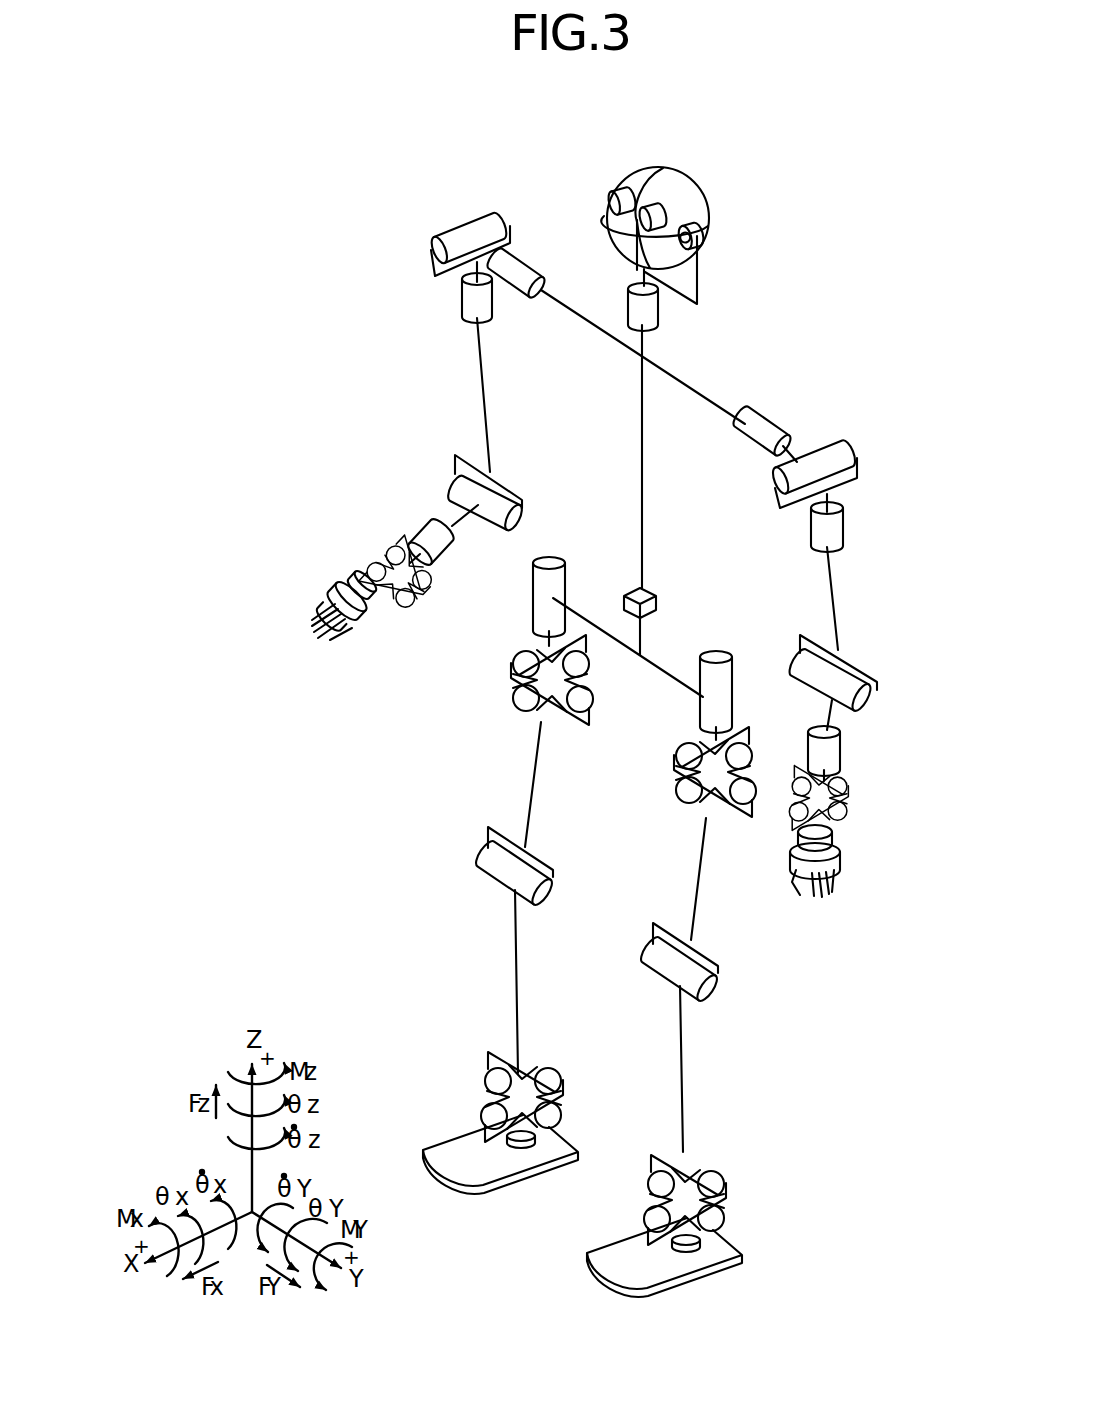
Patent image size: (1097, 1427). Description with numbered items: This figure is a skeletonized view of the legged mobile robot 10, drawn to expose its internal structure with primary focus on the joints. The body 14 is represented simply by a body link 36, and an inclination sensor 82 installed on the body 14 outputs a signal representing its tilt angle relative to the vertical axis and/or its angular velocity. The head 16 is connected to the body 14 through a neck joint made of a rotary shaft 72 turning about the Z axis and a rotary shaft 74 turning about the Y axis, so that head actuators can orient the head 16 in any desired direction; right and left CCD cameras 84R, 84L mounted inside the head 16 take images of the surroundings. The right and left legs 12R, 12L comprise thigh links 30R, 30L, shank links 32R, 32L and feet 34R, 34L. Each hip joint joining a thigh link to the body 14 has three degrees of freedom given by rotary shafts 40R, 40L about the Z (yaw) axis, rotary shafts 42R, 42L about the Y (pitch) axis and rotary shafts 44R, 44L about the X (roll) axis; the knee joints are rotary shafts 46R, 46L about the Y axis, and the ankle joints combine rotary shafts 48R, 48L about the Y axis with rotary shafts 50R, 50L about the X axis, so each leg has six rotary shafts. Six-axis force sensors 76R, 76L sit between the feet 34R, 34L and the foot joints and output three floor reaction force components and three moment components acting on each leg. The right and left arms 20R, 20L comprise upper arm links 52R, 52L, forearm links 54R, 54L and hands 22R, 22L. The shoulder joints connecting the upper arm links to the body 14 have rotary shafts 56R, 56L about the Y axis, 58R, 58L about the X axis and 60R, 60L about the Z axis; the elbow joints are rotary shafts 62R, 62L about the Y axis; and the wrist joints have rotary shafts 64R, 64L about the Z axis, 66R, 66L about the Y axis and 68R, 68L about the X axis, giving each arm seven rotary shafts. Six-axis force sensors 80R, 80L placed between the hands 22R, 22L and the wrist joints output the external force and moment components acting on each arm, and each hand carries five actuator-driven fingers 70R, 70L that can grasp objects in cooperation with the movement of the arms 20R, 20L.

The robot 10 is at (792, 343).
The right leg 12R is at (482, 886).
The left leg 12L is at (723, 982).
The body 14 is at (644, 483).
The head 16 is at (642, 200).
The right arm 20R is at (401, 453).
The left arm 20L is at (842, 680).
The right hand 22R is at (368, 618).
The left hand 22L is at (838, 870).
The right thigh link 30R is at (531, 818).
The left thigh link 30L is at (698, 886).
The right shank link 32R is at (517, 1000).
The left shank link 32L is at (684, 1071).
The right foot 34R is at (485, 1178).
The left foot 34L is at (650, 1280).
The body link 36 is at (645, 545).
The right hip rotary shaft (Z axis) 40R is at (562, 582).
The left hip rotary shaft (Z axis) 40L is at (725, 678).
The right hip rotary shaft (Y axis) 42R is at (525, 681).
The left hip rotary shaft (Y axis) 42L is at (686, 774).
The right hip rotary shaft (X axis) 44R is at (513, 712).
The left hip rotary shaft (X axis) 44L is at (680, 806).
The right knee rotary shaft 46R is at (554, 906).
The left knee rotary shaft 46L is at (722, 993).
The right ankle rotary shaft (Y axis) 48R is at (556, 1115).
The left ankle rotary shaft (Y axis) 48L is at (722, 1216).
The right ankle rotary shaft (X axis) 50R is at (549, 1081).
The left ankle rotary shaft (X axis) 50L is at (716, 1183).
The right upper arm link 52R is at (487, 426).
The left upper arm link 52L is at (836, 587).
The right forearm link 54R is at (462, 521).
The left forearm link 54L is at (836, 702).
The right shoulder rotary shaft (Y axis) 56R is at (530, 278).
The left shoulder rotary shaft (Y axis) 56L is at (765, 426).
The right shoulder rotary shaft (X axis) 58R is at (446, 236).
The left shoulder rotary shaft (X axis) 58L is at (840, 455).
The right shoulder rotary shaft (Z axis) 60R is at (462, 301).
The left shoulder rotary shaft (Z axis) 60L is at (845, 527).
The right elbow rotary shaft 62R is at (528, 513).
The left elbow rotary shaft 62L is at (876, 694).
The right wrist rotary shaft (Z axis) 64R is at (448, 553).
The left wrist rotary shaft (Z axis) 64L is at (842, 756).
The right wrist rotary shaft (Y axis) 66R is at (393, 547).
The left wrist rotary shaft (Y axis) 66L is at (843, 815).
The right wrist rotary shaft (X axis) 68R is at (373, 560).
The left wrist rotary shaft (X axis) 68L is at (854, 798).
The fingers of right hand 70R is at (320, 633).
The fingers of left hand 70L is at (854, 899).
The neck rotary shaft (Z axis) 72 is at (657, 325).
The neck rotary shaft (Y axis) 74 is at (702, 232).
The right leg force sensor 76R is at (530, 1140).
The left leg force sensor 76L is at (697, 1244).
The right arm force sensor 80R is at (355, 582).
The left arm force sensor 80L is at (840, 846).
The inclination sensor 82 is at (657, 600).
The right CCD camera 84R is at (606, 198).
The left CCD camera 84L is at (663, 208).